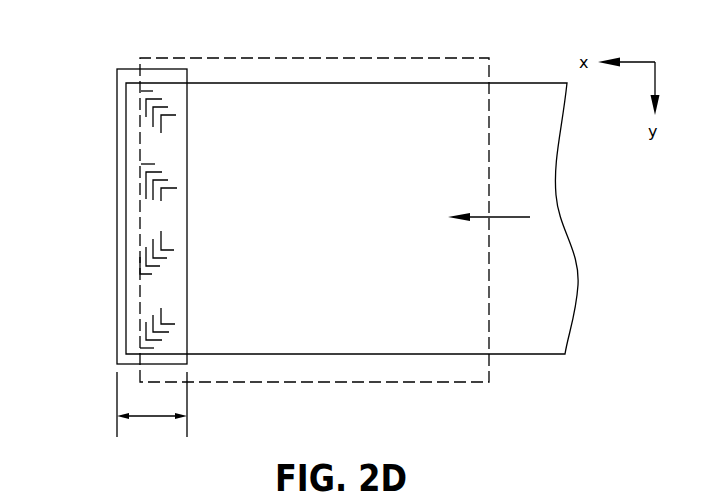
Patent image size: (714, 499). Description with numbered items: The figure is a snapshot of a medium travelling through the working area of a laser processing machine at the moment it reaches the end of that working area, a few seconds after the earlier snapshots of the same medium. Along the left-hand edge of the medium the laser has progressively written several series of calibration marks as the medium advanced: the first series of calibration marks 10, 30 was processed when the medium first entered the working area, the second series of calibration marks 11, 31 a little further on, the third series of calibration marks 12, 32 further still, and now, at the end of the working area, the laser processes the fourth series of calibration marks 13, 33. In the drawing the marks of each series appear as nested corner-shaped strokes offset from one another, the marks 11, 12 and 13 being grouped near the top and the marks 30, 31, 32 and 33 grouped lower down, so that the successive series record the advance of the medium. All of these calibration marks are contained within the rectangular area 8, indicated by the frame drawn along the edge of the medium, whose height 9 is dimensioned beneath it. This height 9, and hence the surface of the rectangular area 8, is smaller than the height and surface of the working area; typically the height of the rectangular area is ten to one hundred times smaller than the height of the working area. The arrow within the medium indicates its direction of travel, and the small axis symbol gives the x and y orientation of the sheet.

The rectangular area 8 is at (117, 338).
The height of the rectangular area 9 is at (150, 418).
The calibration mark 10 is at (137, 95).
The calibration mark 11 is at (162, 99).
The calibration mark 12 is at (168, 107).
The calibration mark 13 is at (172, 116).
The calibration mark 30 is at (140, 259).
The calibration mark 31 is at (146, 247).
The calibration mark 32 is at (153, 239).
The calibration mark 33 is at (161, 231).